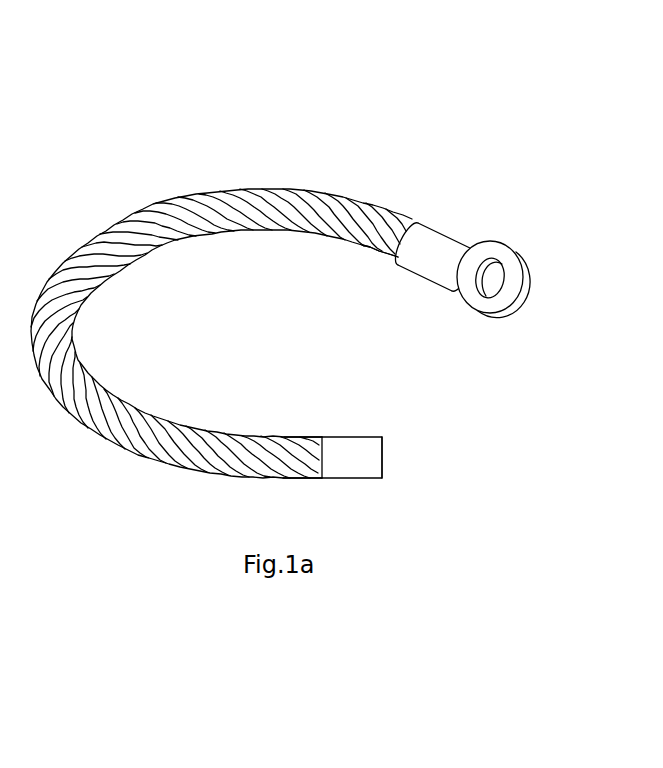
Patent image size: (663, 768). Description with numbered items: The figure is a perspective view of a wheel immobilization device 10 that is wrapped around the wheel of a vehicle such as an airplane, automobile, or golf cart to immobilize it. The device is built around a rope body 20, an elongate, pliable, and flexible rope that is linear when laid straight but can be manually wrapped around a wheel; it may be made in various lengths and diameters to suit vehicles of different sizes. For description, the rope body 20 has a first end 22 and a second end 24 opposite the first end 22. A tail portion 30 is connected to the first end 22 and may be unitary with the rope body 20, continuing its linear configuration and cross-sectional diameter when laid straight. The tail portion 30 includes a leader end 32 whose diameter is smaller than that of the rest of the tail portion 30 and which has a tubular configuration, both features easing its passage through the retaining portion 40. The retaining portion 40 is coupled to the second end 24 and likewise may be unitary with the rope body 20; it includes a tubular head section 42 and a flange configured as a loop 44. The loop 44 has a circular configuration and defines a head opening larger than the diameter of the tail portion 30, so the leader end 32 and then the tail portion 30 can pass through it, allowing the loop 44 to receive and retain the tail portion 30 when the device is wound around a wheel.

The wheel immobilization device 10 is at (294, 100).
The rope body 20 is at (143, 221).
The first end 22 is at (290, 437).
The second end 24 is at (378, 255).
The tail portion 30 is at (355, 479).
The leader end 32 is at (383, 455).
The retaining portion 40 is at (504, 205).
The tubular head section 42 is at (429, 240).
The loop 44 is at (522, 276).